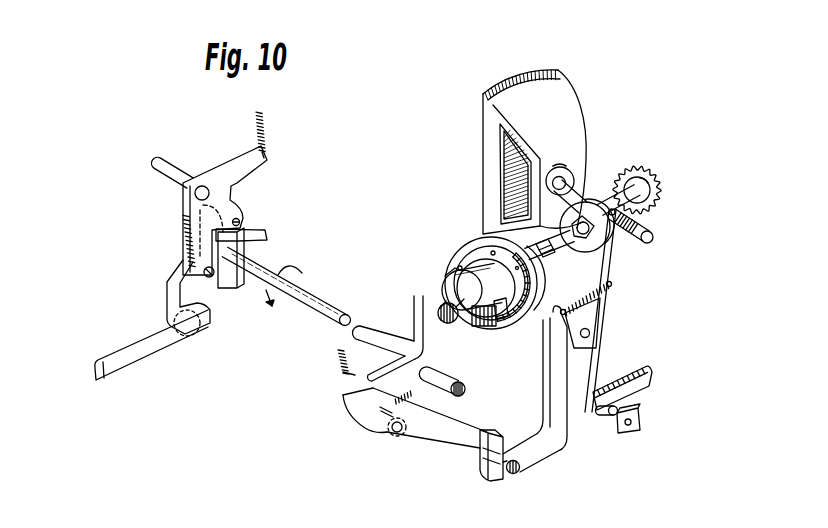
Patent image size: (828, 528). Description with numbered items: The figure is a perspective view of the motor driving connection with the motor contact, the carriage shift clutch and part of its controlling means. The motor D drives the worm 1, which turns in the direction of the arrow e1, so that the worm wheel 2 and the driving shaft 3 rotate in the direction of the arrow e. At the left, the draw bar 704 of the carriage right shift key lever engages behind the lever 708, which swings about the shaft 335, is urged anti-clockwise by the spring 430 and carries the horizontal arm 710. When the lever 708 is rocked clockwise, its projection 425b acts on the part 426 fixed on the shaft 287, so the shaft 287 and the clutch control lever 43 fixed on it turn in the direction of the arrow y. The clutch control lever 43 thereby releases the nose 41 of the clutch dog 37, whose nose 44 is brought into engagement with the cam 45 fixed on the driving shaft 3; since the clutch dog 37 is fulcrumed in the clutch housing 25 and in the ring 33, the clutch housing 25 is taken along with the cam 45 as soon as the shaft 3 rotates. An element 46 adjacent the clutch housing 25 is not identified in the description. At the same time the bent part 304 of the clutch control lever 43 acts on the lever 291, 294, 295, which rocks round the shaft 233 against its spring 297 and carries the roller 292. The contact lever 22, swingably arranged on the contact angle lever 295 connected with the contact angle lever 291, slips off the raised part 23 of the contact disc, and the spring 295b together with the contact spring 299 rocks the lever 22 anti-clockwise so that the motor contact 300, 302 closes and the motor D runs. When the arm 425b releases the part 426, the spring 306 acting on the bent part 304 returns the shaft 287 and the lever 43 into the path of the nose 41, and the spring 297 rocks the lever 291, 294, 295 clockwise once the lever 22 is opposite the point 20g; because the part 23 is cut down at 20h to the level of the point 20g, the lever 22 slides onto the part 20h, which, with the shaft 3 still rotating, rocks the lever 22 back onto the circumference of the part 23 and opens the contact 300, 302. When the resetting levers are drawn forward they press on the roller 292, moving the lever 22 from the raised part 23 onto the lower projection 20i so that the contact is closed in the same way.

The motor D is at (563, 91).
The arrow e1 is at (565, 165).
The cut-down part of the contact disc 20h is at (590, 203).
The point of the shaft 20g is at (606, 232).
The lower projection of the contact disc 20i is at (604, 246).
The raised part of the contact disc 23 is at (614, 200).
The arrow e is at (657, 182).
The worm wheel 2 is at (663, 195).
The worm 1 is at (633, 240).
The driving shaft 3 is at (542, 240).
The ring 33 is at (478, 256).
The ratchet ring 46 is at (524, 287).
The clutch housing 25 is at (531, 322).
The nose of the clutch dog 41 is at (449, 280).
The cam 45 is at (454, 324).
The clutch dog 37 is at (482, 327).
The nose of the clutch dog 44 is at (502, 320).
The clutch control lever 43 is at (418, 345).
The spring 306 is at (338, 353).
The bent part of the clutch control lever 304 is at (352, 381).
The roller 292 is at (367, 407).
The contact angle lever 291 is at (430, 441).
The spring 297 is at (411, 401).
The shaft 287 is at (320, 302).
The arrow y is at (284, 276).
The lever portion 294 is at (490, 481).
The shaft 233 is at (515, 474).
The contact angle lever 295 is at (560, 371).
The contact lever 22 is at (593, 315).
The spring 295b is at (580, 297).
The contact spring 299 is at (652, 383).
The motor contact 302 is at (641, 424).
The motor contact 300 is at (607, 417).
The horizontal arm 710 is at (247, 165).
The shaft 335 is at (180, 167).
The spring 430 is at (266, 120).
The part fixed on shaft 426 is at (240, 226).
The projection of lever 425b is at (244, 220).
The lever 708 is at (178, 308).
The draw bar 704 is at (132, 366).